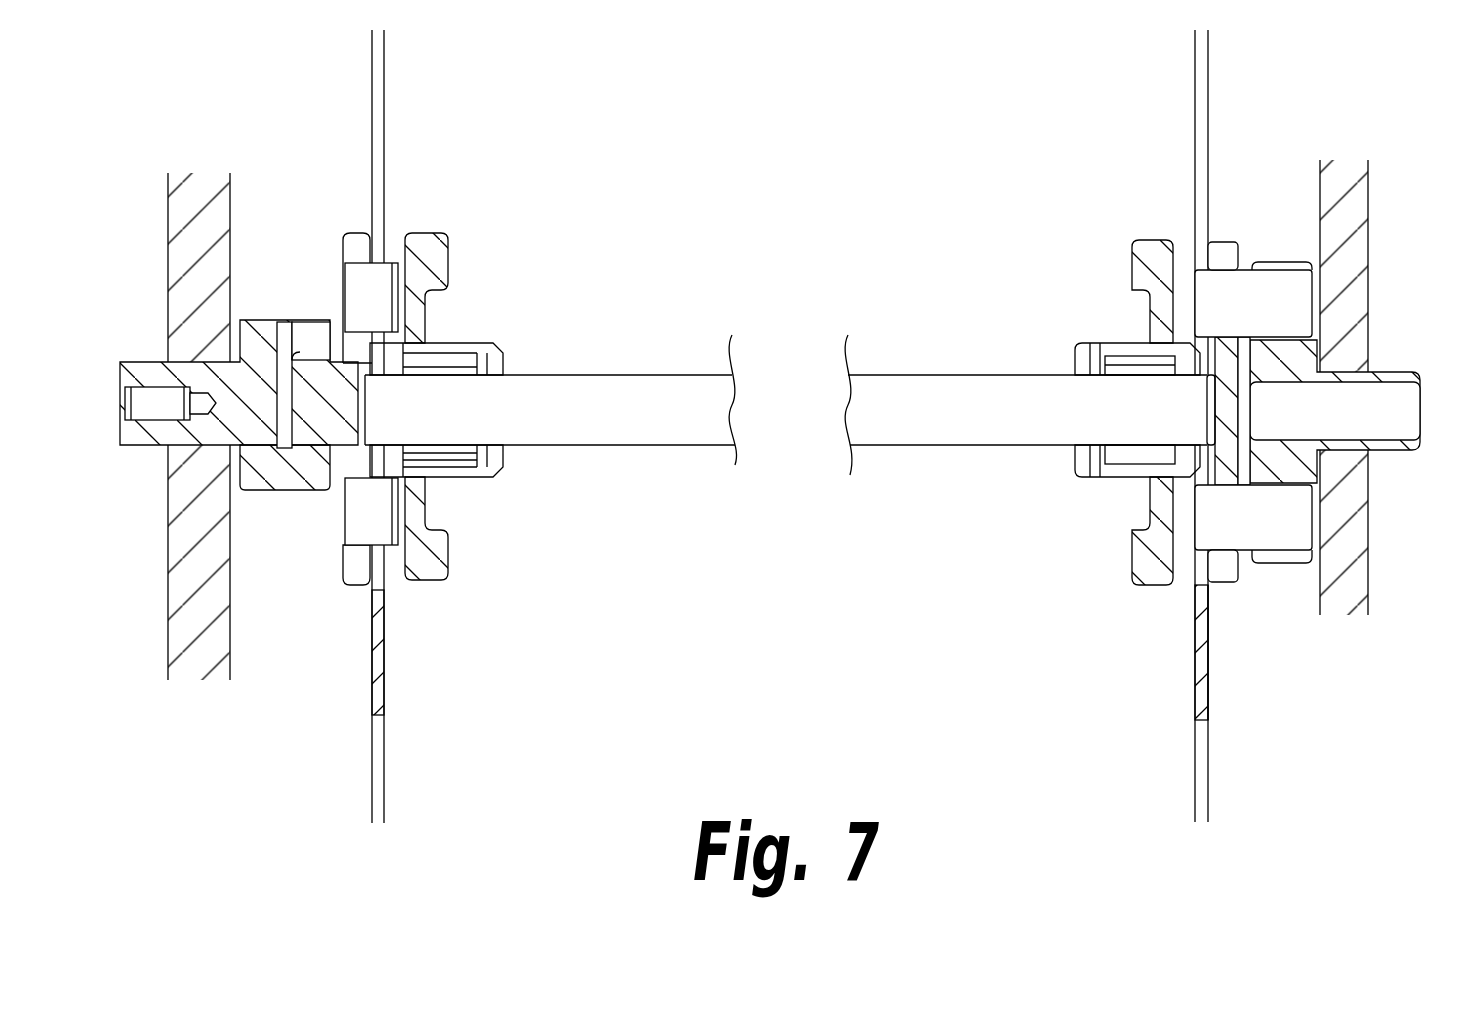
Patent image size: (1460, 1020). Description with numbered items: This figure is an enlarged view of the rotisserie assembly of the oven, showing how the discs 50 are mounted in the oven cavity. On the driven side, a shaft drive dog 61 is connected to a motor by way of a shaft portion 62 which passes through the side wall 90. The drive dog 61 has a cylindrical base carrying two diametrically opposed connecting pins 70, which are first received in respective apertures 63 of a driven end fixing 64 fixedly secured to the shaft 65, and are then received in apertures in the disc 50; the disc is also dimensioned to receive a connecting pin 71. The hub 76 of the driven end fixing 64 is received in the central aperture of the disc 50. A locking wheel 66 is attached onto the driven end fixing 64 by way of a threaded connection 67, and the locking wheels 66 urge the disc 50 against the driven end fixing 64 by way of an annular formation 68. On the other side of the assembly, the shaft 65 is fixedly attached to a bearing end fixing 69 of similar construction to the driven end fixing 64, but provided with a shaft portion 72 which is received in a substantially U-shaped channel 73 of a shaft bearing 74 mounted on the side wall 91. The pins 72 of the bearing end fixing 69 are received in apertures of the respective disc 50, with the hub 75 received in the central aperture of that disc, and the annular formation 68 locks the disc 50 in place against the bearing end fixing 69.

The disc 50 is at (390, 180).
The side wall 91 is at (213, 232).
The U-shaped channel 73 is at (275, 353).
The shaft portion 72 is at (290, 452).
The shaft bearing 74 is at (298, 493).
The bearing end fixing 69 is at (357, 587).
The annular formation 68 is at (393, 330).
The connecting pin 71 is at (405, 289).
The locking wheel 66 is at (502, 340).
The hub 75 is at (447, 476).
The threaded connection 67 is at (1123, 367).
The shaft 65 is at (636, 390).
The connecting pin 70 is at (1188, 283).
The aperture 63 is at (1222, 250).
The hub 76 is at (1210, 365).
The shaft drive dog 61 is at (1280, 566).
The shaft portion 62 is at (1388, 377).
The side wall 90 is at (1347, 214).
The driven end fixing 64 is at (1222, 593).